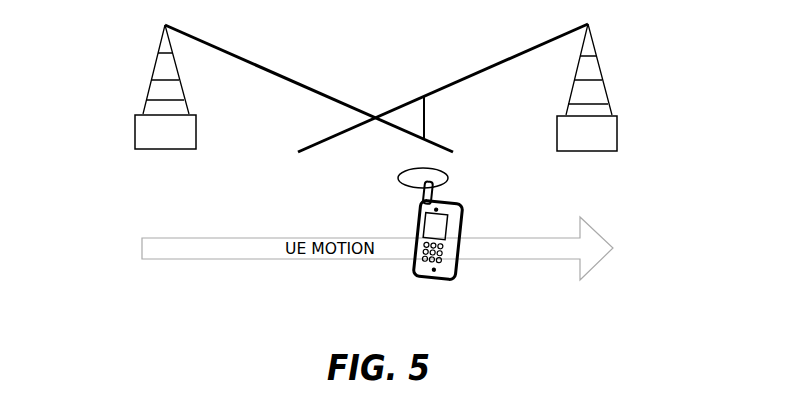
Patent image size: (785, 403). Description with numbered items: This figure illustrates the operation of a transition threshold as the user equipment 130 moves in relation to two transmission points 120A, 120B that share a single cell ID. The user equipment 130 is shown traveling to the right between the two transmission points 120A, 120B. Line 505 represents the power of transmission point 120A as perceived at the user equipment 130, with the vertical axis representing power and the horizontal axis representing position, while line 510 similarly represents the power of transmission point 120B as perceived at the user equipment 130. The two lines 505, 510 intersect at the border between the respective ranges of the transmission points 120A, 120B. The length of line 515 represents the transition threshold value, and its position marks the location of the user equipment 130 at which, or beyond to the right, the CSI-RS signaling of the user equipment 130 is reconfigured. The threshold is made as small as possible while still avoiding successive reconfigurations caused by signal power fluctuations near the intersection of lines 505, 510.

The transmission point 120A is at (143, 115).
The transmission point 120B is at (610, 115).
The line 505 is at (243, 57).
The line 510 is at (519, 55).
The line 515 is at (425, 117).
The user equipment 130 is at (420, 271).